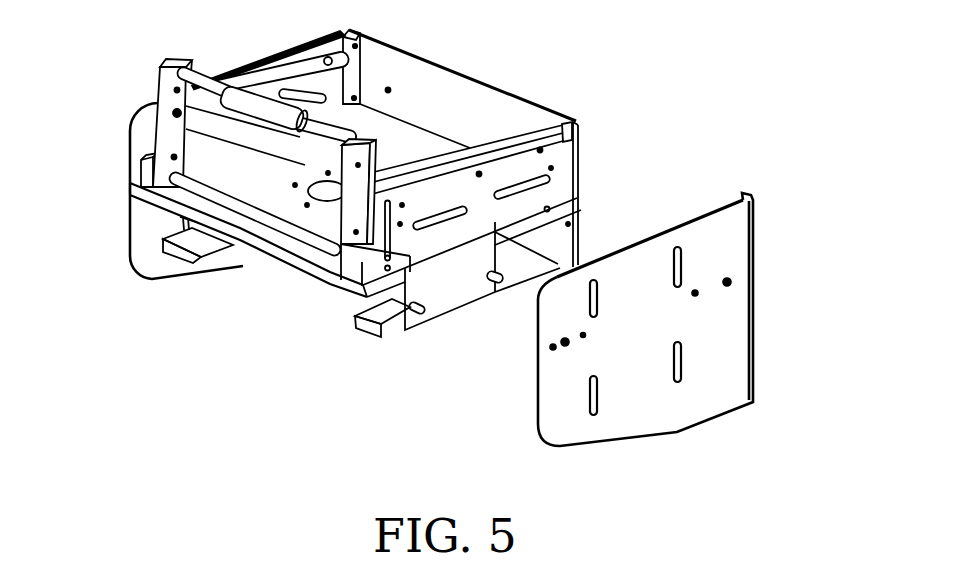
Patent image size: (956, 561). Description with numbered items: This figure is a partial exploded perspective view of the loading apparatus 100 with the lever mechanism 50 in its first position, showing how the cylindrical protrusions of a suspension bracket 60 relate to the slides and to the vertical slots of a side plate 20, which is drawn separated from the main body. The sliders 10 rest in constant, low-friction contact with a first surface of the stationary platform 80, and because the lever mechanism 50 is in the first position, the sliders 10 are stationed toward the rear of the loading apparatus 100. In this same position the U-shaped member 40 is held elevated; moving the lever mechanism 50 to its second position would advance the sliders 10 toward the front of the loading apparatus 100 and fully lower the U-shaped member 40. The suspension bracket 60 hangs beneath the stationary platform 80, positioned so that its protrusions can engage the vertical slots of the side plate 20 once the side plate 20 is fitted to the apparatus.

The slider 10 is at (567, 110).
The side plate 20 is at (757, 179).
The U-shaped member 40 is at (151, 265).
The lever mechanism 50 is at (131, 119).
The suspension bracket 60 is at (453, 316).
The stationary platform 80 is at (324, 285).
The loading apparatus 100 is at (451, 237).